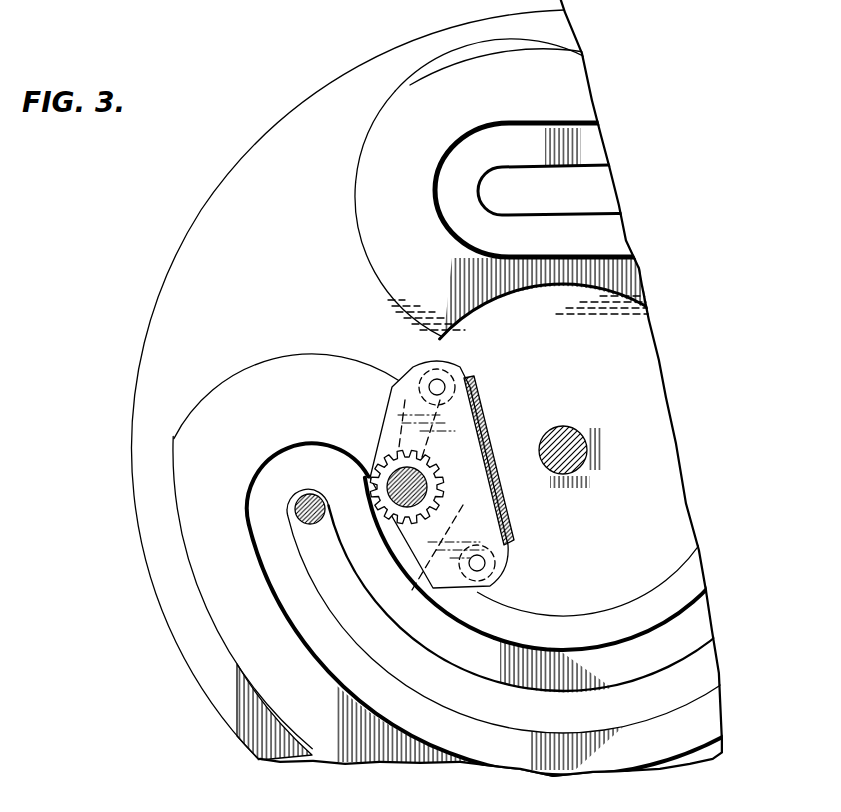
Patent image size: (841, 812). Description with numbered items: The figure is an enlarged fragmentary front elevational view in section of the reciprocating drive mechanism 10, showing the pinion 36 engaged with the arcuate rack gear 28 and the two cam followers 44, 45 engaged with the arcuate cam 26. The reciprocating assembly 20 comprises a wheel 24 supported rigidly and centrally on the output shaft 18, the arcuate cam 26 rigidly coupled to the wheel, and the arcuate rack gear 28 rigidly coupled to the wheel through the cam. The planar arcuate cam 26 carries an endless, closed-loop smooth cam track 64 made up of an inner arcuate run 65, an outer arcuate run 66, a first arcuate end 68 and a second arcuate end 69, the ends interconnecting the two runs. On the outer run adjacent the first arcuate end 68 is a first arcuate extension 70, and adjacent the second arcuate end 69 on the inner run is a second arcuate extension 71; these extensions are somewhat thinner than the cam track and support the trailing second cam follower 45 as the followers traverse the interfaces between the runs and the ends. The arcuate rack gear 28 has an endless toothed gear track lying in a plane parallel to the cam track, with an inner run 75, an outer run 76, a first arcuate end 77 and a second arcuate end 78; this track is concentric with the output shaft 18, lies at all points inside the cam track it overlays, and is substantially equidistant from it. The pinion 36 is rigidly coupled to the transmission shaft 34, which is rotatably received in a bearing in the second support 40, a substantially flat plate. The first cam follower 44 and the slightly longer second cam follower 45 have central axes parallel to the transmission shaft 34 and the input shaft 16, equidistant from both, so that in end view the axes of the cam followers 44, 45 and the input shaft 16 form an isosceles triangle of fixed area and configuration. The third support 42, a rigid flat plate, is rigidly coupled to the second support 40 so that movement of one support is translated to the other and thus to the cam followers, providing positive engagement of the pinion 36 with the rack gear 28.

The reciprocating drive mechanism 10 is at (241, 139).
The input shaft 16 is at (323, 530).
The output shaft 18 is at (572, 429).
The reciprocating assembly 20 is at (313, 88).
The wheel 24 is at (200, 205).
The arcuate cam 26 is at (380, 103).
The arcuate rack gear 28 is at (541, 637).
The transmission shaft 34 is at (392, 532).
The pinion 36 is at (376, 463).
The second support 40 is at (414, 362).
The third support 42 is at (489, 435).
The first cam follower 44 is at (447, 376).
The second cam follower 45 is at (503, 567).
The cam track 64 is at (356, 138).
The inner arcuate run 65 is at (566, 289).
The outer arcuate run 66 is at (178, 533).
The first arcuate end 68 is at (354, 201).
The second arcuate end 69 is at (290, 355).
The first arcuate extension 70 is at (441, 62).
The second arcuate extension 71 is at (498, 496).
The inner run 75 is at (514, 293).
The outer run 76 is at (514, 123).
The first arcuate end 77 is at (440, 212).
The second arcuate end 78 is at (288, 446).